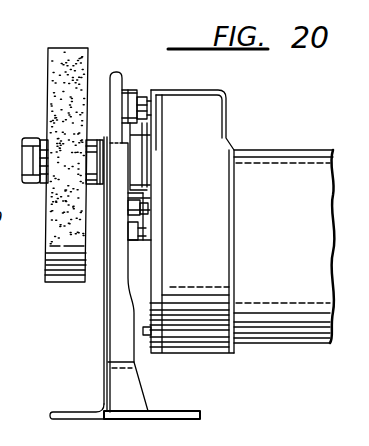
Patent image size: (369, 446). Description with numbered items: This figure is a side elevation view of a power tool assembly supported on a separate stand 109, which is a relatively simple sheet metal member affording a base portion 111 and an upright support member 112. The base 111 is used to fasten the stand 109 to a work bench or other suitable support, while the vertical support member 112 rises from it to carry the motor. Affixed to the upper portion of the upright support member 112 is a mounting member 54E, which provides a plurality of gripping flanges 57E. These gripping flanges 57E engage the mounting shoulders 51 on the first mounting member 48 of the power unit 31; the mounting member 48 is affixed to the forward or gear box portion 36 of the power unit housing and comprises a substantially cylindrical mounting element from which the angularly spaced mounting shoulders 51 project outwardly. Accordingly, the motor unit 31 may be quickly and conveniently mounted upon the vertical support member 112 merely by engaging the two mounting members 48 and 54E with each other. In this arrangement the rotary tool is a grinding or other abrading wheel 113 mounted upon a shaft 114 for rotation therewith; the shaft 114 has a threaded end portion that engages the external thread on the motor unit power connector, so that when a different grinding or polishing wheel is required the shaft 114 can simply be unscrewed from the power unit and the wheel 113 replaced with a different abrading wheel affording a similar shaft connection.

The abrading wheel 113 is at (58, 65).
The shaft 114 is at (104, 137).
The mounting member 54E is at (130, 96).
The gear box portion of the housing 36 is at (198, 95).
The power unit 31 is at (300, 151).
The first mounting member 48 is at (133, 155).
The mounting shoulders 51 is at (132, 212).
The gripping flanges 57E is at (135, 233).
The upright support member 112 is at (111, 308).
The base portion 111 is at (80, 411).
The stand 109 is at (147, 385).